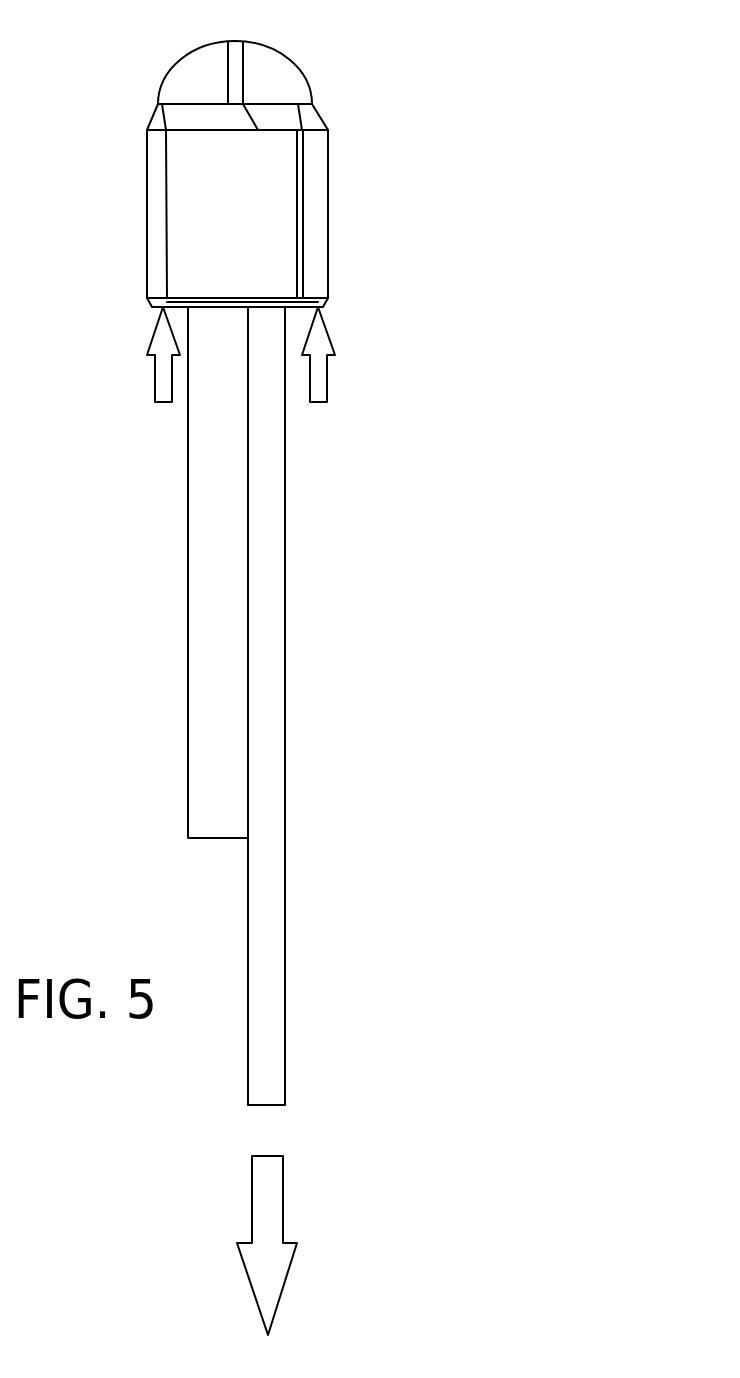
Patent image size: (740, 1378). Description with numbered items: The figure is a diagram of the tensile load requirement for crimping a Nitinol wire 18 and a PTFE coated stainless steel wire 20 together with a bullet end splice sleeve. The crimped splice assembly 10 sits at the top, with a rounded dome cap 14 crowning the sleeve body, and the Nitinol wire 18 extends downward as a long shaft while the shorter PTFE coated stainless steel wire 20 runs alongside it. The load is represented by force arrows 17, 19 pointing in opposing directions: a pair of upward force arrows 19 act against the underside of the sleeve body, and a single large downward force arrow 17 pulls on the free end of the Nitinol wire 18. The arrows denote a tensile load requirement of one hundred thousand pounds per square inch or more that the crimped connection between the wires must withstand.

The fastener body 10 is at (330, 178).
The domed head cap 14 is at (286, 55).
The force arrow 17 is at (245, 1273).
The Nitinol wire 18 is at (277, 662).
The force arrows 19 is at (333, 332).
The PTFE coated stainless steel wire 20 is at (195, 720).